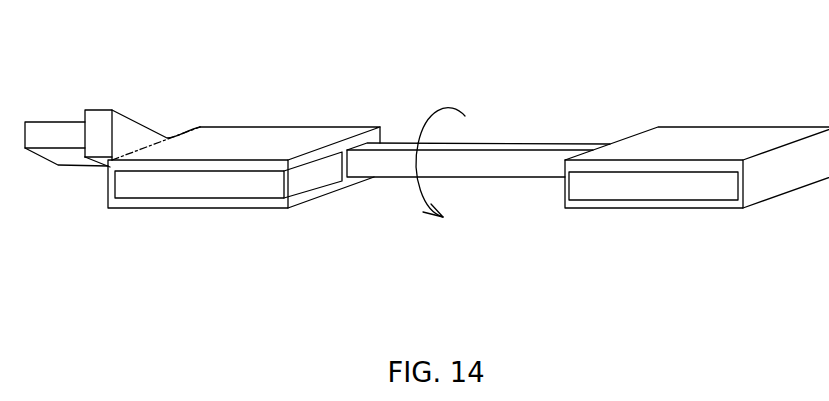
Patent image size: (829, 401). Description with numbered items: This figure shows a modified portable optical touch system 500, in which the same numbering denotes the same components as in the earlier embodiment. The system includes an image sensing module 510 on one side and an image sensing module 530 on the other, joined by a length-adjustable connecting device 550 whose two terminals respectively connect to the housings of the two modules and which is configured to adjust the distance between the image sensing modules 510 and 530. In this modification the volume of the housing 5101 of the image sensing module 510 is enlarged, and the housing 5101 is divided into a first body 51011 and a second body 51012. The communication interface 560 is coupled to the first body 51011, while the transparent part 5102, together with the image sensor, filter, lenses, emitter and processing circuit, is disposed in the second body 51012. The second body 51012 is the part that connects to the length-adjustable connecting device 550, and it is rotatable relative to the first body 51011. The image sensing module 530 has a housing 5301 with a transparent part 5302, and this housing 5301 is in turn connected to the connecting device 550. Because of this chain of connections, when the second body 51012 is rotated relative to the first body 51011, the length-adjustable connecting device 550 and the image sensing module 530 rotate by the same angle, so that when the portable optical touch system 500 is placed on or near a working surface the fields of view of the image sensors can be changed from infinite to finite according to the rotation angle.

The portable optical touch system 500 is at (427, 168).
The image sensing module 510 is at (232, 131).
The housing 5101 is at (184, 90).
The first body 51011 is at (138, 120).
The second body 51012 is at (102, 50).
The transparent part 5102 is at (205, 192).
The length-adjustable connecting device 550 is at (505, 142).
The image sensing module 530 is at (697, 147).
The housing 5301 is at (718, 135).
The transparent part 5302 is at (645, 192).
The communication interface 560 is at (58, 127).